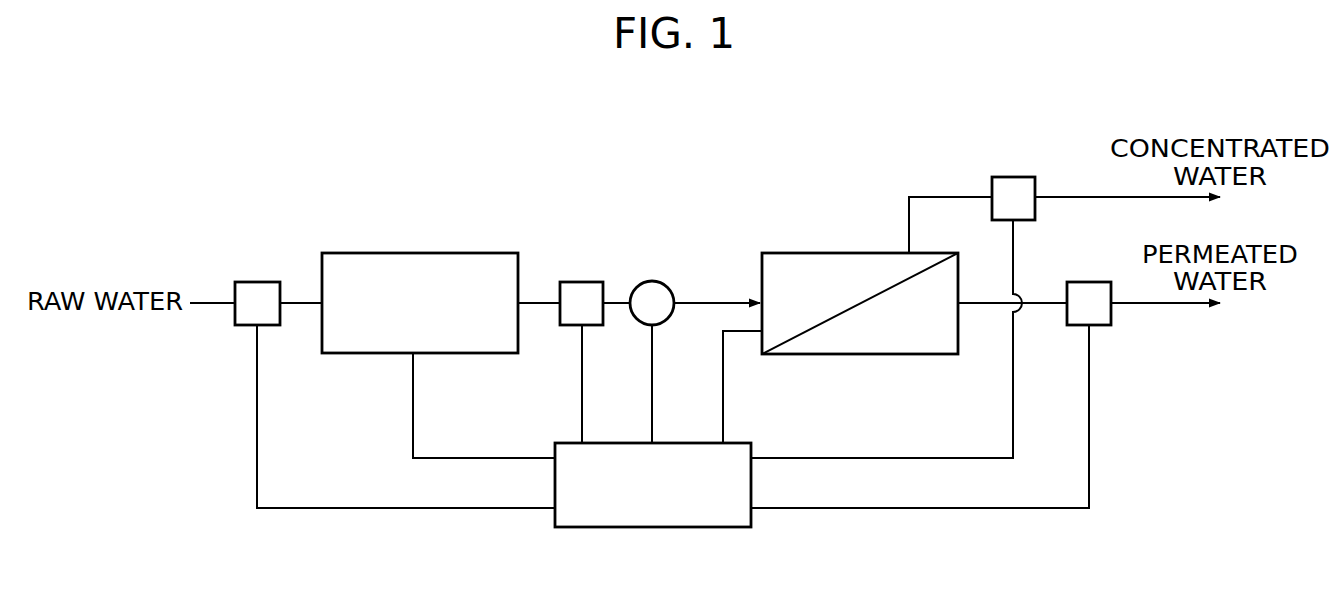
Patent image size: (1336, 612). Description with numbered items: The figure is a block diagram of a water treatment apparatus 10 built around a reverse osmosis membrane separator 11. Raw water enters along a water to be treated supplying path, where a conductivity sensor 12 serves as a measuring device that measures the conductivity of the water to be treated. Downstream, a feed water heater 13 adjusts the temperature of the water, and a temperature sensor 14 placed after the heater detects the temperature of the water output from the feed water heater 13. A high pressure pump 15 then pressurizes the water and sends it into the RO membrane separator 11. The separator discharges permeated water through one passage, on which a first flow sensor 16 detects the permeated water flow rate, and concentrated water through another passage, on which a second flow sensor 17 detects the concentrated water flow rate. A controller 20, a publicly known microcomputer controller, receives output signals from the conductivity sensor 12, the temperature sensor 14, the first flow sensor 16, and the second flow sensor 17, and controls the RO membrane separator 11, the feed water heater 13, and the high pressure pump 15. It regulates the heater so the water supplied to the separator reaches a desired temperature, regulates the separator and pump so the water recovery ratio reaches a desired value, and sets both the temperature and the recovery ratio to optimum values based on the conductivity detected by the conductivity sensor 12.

The water treatment apparatus 10 is at (465, 178).
The reverse osmosis membrane separator 11 is at (790, 265).
The conductivity sensor 12 is at (256, 288).
The feed water heater 13 is at (352, 253).
The temperature sensor 14 is at (580, 290).
The high pressure pump 15 is at (652, 282).
The first flow sensor 16 is at (1088, 290).
The second flow sensor 17 is at (1010, 183).
The controller 20 is at (589, 528).